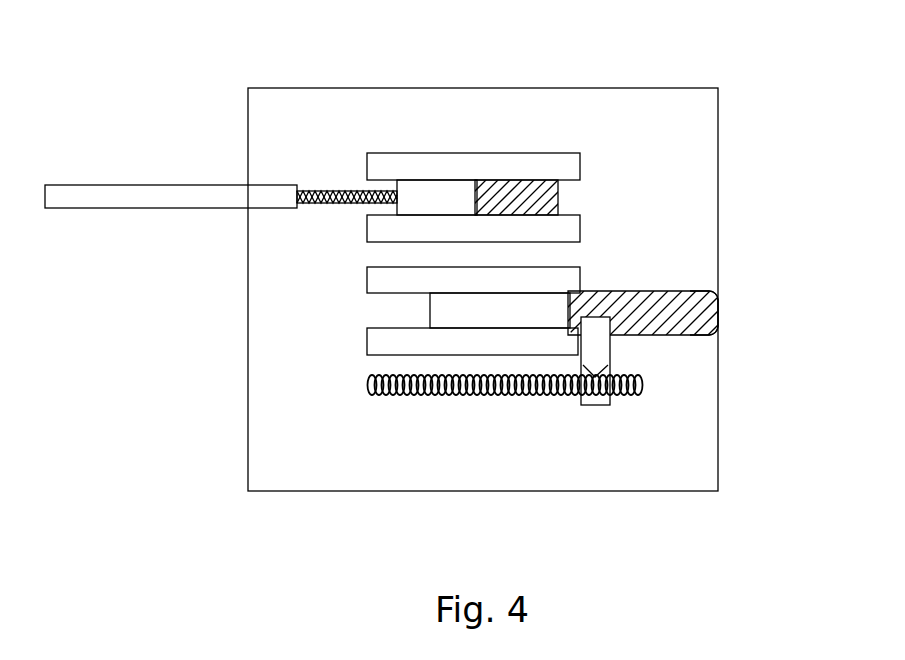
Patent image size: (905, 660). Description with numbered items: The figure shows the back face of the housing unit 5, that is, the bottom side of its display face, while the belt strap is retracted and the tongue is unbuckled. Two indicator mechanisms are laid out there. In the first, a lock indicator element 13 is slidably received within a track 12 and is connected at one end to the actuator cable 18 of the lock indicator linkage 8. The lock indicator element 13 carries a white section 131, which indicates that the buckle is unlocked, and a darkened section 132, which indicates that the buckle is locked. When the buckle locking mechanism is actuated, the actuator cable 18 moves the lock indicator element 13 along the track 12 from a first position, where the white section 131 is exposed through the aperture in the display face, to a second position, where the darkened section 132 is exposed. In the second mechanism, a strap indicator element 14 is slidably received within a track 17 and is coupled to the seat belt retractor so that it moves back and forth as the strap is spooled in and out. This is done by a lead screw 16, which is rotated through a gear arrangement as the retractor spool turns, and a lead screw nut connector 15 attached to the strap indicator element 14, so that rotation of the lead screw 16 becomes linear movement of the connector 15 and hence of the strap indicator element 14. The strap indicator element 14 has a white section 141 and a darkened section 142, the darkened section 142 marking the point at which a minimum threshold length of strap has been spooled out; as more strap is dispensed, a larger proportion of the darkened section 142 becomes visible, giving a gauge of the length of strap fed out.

The housing unit 5 is at (653, 88).
The lock indicator linkage 8 is at (95, 198).
The actuator cable 18 is at (340, 202).
The track 12 is at (567, 163).
The lock indicator element 13 is at (575, 132).
The white section 131 is at (432, 195).
The darkened section 132 is at (517, 187).
The track 17 is at (385, 338).
The white section 141 is at (467, 317).
The strap indicator element 14 is at (708, 303).
The darkened section 142 is at (692, 317).
The lead screw nut connector 15 is at (600, 347).
The lead screw 16 is at (560, 397).